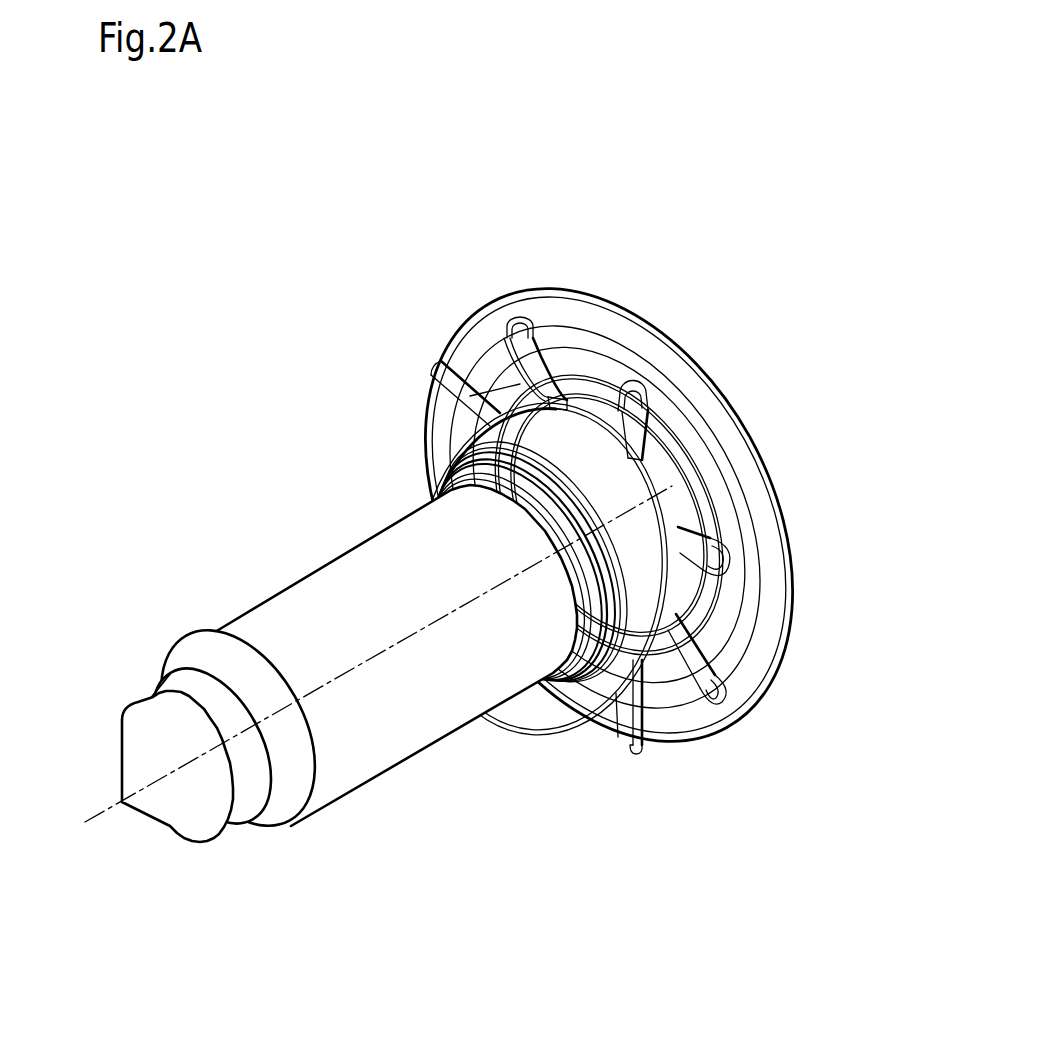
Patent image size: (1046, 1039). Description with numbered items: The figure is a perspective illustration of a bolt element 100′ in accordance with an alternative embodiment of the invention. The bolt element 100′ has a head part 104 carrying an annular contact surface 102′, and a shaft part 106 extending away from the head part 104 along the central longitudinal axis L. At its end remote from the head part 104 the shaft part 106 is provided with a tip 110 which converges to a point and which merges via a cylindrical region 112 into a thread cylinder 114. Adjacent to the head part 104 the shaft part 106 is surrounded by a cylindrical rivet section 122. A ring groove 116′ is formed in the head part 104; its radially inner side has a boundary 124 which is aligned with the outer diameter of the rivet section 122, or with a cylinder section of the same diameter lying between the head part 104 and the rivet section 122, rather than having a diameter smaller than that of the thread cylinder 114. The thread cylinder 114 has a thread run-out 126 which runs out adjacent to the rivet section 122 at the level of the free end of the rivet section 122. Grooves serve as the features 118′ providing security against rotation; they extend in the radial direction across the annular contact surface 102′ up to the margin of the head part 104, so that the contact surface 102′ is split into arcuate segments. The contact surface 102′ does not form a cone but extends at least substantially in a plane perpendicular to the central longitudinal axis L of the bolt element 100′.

The bolt element 100′ is at (317, 303).
The annular contact surface 102′ is at (547, 474).
The head part 104 is at (600, 322).
The shaft part 106 is at (309, 652).
The tip 110 is at (145, 732).
The cylindrical region 112 is at (200, 702).
The thread cylinder 114 is at (432, 720).
The ring groove 116′ is at (500, 382).
The features providing security against rotation 118′ is at (520, 340).
The cylindrical rivet section 122 is at (573, 440).
The boundary 124 is at (648, 478).
The thread run-out 126 is at (582, 602).
The central longitudinal axis L is at (102, 813).